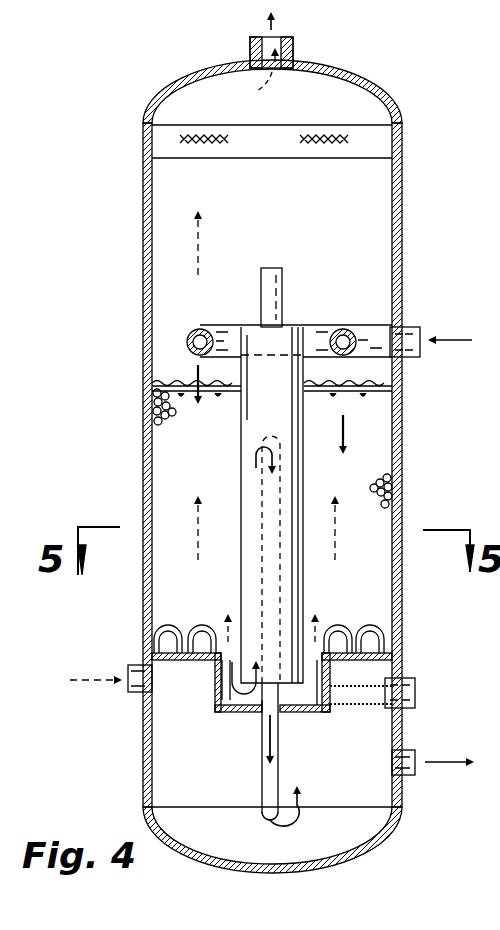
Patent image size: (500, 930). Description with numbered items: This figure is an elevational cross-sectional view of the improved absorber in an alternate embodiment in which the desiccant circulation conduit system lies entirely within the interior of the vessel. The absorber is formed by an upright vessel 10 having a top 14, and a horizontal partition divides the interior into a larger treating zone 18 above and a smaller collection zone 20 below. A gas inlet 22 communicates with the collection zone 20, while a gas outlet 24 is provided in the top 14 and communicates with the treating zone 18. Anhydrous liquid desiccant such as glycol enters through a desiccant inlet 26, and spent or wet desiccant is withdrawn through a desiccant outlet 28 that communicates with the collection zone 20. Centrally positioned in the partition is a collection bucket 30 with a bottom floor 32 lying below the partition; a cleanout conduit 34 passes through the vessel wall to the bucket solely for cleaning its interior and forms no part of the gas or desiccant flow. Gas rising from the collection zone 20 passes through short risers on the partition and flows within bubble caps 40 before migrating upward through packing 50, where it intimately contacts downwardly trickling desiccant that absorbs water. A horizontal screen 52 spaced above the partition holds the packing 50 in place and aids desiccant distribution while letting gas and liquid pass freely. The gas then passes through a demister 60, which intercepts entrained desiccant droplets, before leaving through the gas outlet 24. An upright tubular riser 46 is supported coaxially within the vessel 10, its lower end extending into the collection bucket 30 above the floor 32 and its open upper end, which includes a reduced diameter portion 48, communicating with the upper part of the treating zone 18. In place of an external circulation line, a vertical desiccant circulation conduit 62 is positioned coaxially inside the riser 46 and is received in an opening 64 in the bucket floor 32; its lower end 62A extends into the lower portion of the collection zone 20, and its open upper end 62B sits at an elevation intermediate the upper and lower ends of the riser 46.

The upright vessel 10 is at (403, 222).
The top 14 is at (370, 80).
The treating zone 18 is at (276, 216).
The collection zone 20 is at (337, 802).
The gas inlet 22 is at (135, 695).
The gas outlet 24 is at (296, 45).
The desiccant inlet 26 is at (420, 330).
The desiccant outlet 28 is at (406, 750).
The collection bucket 30 is at (222, 700).
The bottom floor 32 is at (235, 700).
The cleanout conduit 34 is at (403, 690).
The bubble caps 40 is at (370, 632).
The upright tubular riser 46 is at (241, 590).
The reduced diameter portion 48 is at (283, 296).
The packing 50 is at (392, 487).
The screen 52 is at (375, 390).
The demister 60 is at (386, 142).
The vertical desiccant circulation conduit 62 is at (288, 590).
The lower end 62A is at (262, 818).
The upper end 62B is at (245, 438).
The opening 64 is at (265, 712).